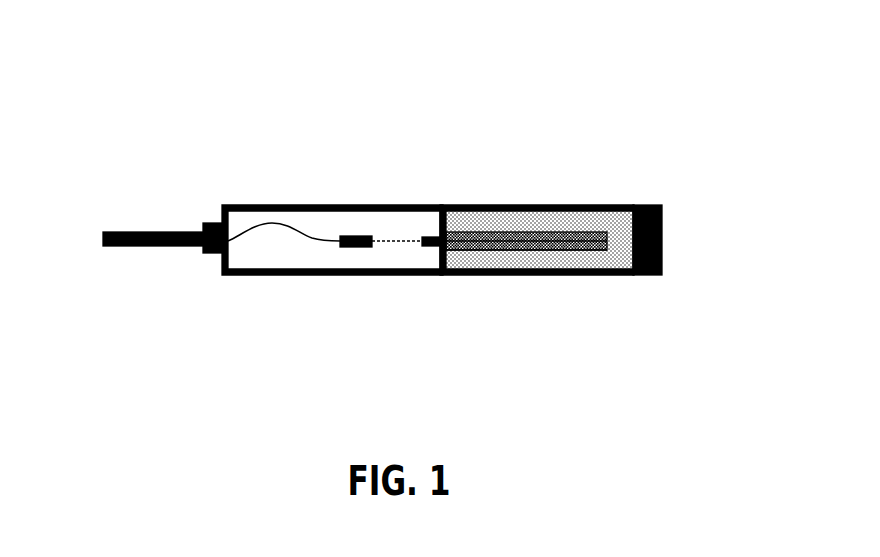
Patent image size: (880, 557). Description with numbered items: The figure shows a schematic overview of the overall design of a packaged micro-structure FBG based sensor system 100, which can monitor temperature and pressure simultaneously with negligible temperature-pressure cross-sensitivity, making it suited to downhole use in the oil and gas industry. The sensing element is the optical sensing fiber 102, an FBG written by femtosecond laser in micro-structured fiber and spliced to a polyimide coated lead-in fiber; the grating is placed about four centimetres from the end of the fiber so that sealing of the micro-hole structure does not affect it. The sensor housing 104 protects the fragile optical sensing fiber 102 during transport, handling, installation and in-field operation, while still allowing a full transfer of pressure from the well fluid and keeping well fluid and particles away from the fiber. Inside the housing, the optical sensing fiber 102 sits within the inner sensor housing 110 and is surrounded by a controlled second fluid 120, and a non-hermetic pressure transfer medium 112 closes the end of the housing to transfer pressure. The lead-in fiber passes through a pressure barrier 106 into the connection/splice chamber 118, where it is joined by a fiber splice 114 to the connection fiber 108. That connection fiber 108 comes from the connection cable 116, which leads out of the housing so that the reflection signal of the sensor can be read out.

The sensor system 100 is at (163, 82).
The optical sensing fiber 102 is at (552, 232).
The sensor housing 104 is at (489, 277).
The pressure barrier 106 is at (430, 237).
The connection fiber 108 is at (283, 226).
The inner sensor housing 110 is at (575, 250).
The non-hermetic pressure transfer medium 112 is at (662, 215).
The fiber splice 114 is at (353, 236).
The connection cable 116 is at (103, 232).
The connection/splice chamber 118 is at (254, 277).
The second fluid 120 is at (632, 276).